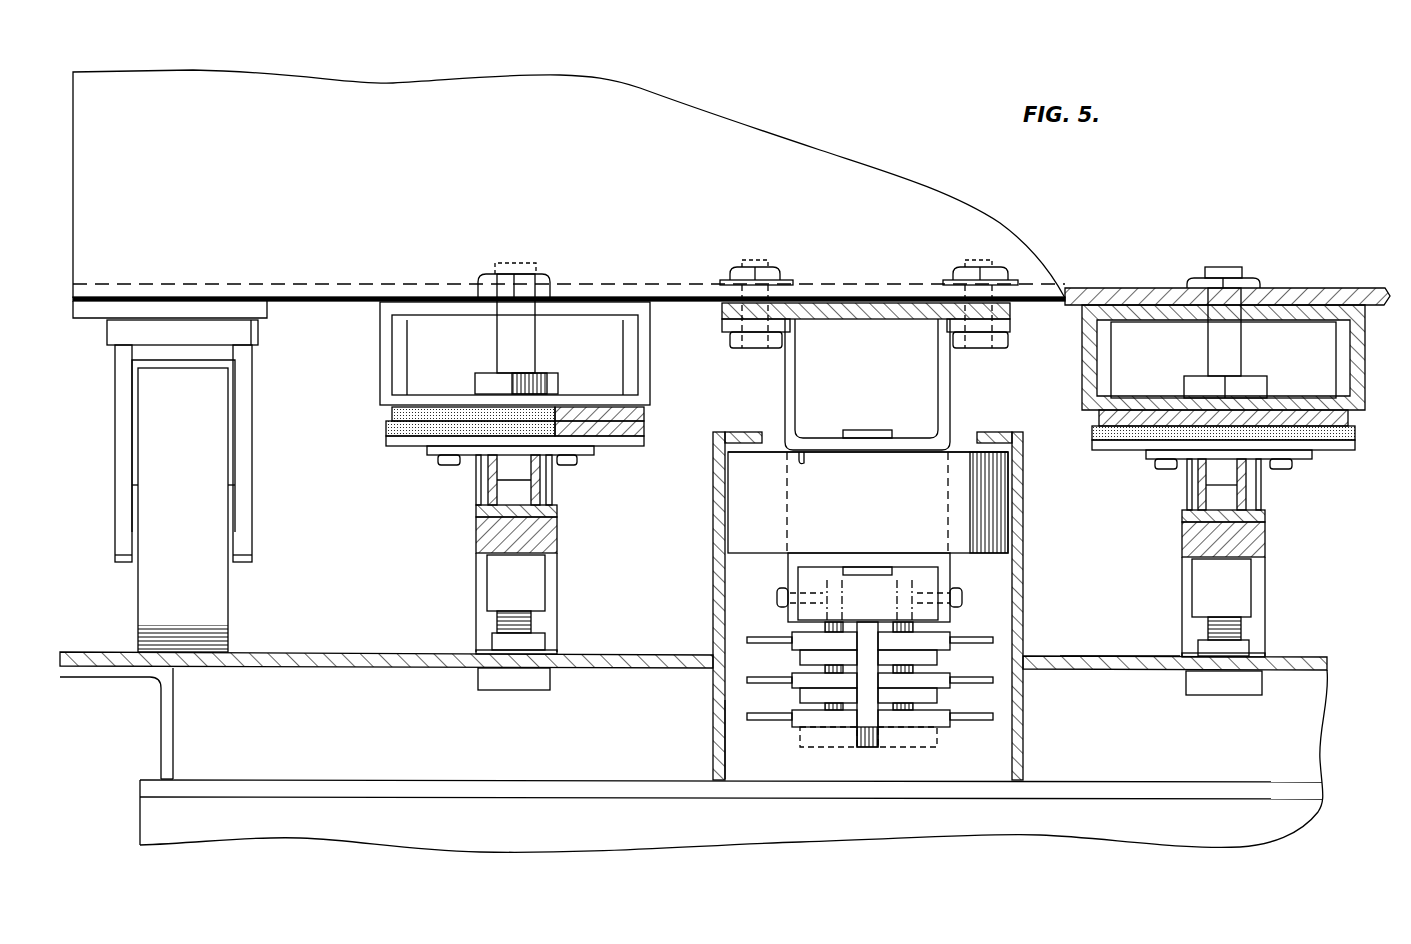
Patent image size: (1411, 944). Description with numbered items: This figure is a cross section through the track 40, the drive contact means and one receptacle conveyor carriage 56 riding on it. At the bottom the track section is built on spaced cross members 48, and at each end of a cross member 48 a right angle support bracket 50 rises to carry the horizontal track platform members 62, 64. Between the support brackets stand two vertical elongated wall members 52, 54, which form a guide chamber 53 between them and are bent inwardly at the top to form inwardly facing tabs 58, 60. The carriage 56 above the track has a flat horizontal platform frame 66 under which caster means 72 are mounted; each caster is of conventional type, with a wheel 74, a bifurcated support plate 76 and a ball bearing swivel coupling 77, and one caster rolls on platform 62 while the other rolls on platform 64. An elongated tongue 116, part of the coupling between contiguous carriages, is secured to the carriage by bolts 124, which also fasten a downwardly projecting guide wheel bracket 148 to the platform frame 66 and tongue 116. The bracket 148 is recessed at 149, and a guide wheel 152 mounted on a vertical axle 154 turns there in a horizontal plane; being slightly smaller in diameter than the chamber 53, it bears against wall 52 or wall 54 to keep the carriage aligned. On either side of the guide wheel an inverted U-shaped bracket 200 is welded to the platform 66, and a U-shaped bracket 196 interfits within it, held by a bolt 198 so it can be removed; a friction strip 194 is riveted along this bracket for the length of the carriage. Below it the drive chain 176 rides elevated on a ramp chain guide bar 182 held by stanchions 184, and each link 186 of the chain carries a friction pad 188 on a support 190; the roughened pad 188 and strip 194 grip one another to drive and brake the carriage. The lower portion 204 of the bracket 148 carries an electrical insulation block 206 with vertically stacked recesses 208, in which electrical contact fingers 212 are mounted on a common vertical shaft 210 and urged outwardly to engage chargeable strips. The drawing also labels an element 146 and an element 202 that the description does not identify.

The track 40 is at (1318, 652).
The cross members 48 is at (140, 808).
The right angle support brackets 50 is at (163, 716).
The vertical elongated wall member 52 is at (1022, 565).
The guide chamber 53 is at (735, 736).
The vertical elongated wall member 54 is at (713, 605).
The receptacle conveyor means 56 is at (1048, 246).
The inwardly facing tab 58 is at (990, 437).
The inwardly facing tab 60 is at (752, 434).
The horizontal track platform member 62 is at (1120, 656).
The horizontal track platform member 64 is at (325, 652).
The platform frame 66 is at (1100, 298).
The caster means 72 is at (135, 580).
The wheel 74 is at (183, 510).
The bifurcated support plate 76 is at (250, 395).
The ball bearing swivel coupling 77 is at (260, 333).
The elongated tongue 116 is at (845, 320).
The bolts 124 is at (748, 260).
The assembly 146 is at (775, 455).
The guide wheel bracket 148 is at (948, 385).
The recess 149 is at (805, 456).
The guide wheel 152 is at (868, 502).
The vertical axle 154 is at (880, 433).
The drive chains 176 is at (548, 500).
The ramp chain guide bar 182 is at (475, 525).
The stanchions 184 is at (530, 580).
The links 186 is at (488, 493).
The friction pads 188 is at (388, 428).
The support 190 is at (412, 446).
The friction strip 194 is at (394, 413).
The U-shaped bracket 196 is at (404, 358).
The bolt 198 is at (530, 349).
The inverted U-shaped bracket 200 is at (652, 376).
The switch assembly 202 is at (812, 755).
The lower portion 204 is at (945, 612).
The electrical insulation block 206 is at (872, 748).
The recesses 208 is at (810, 632).
The common vertical shaft 210 is at (812, 741).
The electrical contact fingers 212 is at (755, 683).